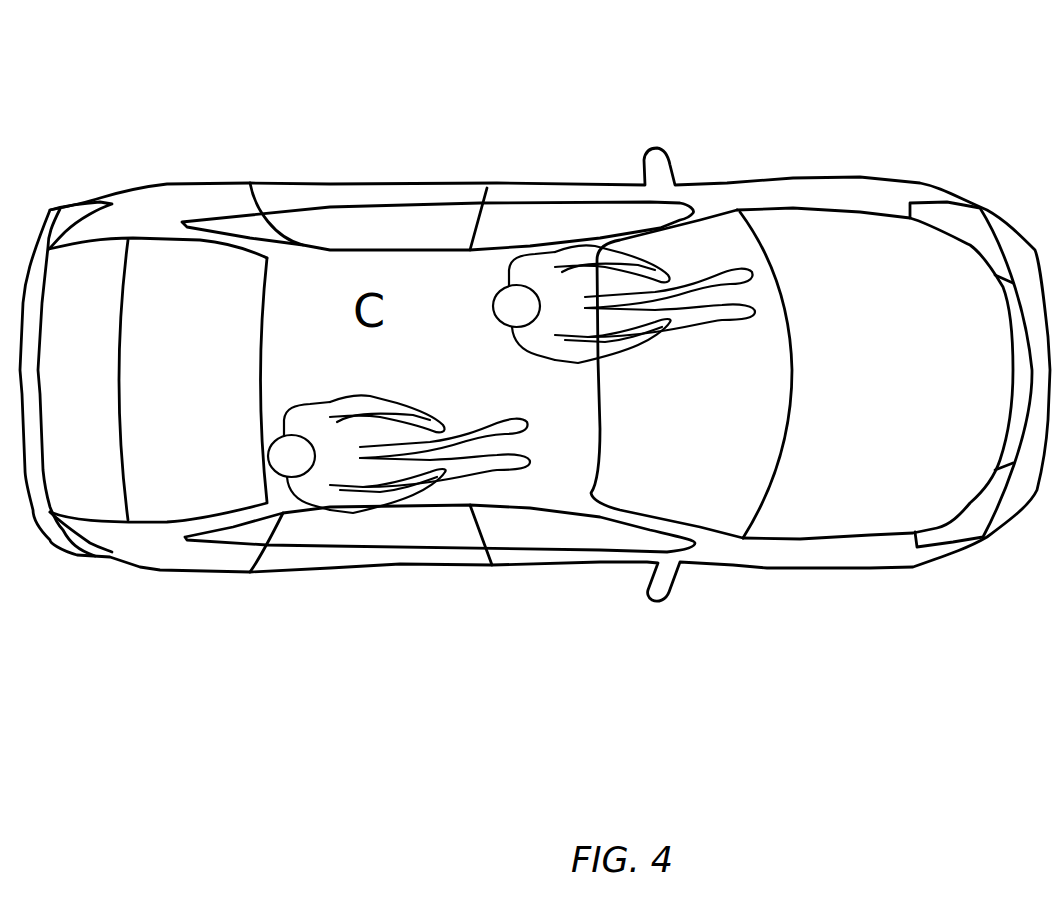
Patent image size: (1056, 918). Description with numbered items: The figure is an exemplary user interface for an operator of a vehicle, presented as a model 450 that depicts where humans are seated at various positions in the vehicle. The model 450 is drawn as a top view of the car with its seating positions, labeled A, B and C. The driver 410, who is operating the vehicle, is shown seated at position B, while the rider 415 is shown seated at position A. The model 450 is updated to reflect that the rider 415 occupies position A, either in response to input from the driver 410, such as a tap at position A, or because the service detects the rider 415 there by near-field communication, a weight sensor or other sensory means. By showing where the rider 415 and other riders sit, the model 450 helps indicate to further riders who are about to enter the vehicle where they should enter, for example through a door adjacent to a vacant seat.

The driver 410 is at (523, 268).
The rider 415 is at (312, 494).
The model 450 is at (858, 178).